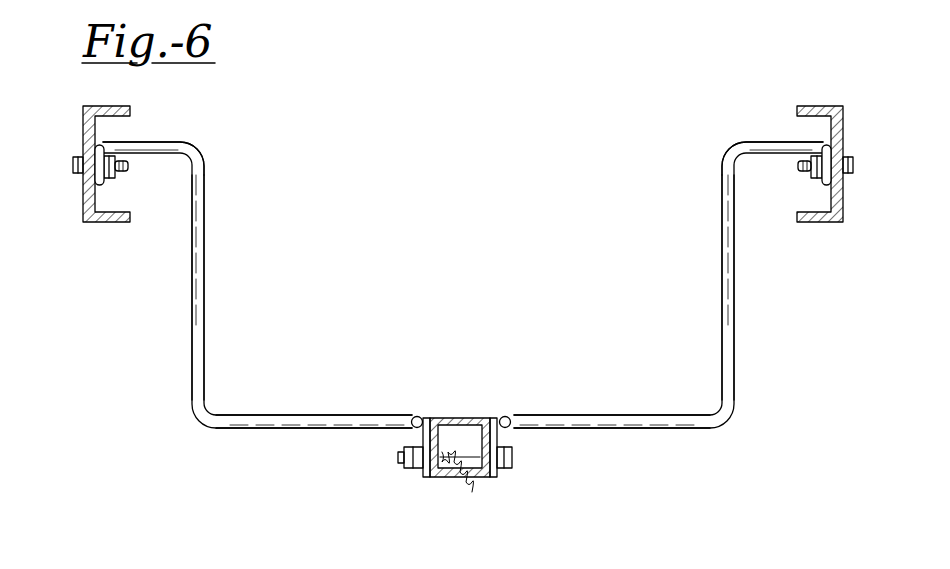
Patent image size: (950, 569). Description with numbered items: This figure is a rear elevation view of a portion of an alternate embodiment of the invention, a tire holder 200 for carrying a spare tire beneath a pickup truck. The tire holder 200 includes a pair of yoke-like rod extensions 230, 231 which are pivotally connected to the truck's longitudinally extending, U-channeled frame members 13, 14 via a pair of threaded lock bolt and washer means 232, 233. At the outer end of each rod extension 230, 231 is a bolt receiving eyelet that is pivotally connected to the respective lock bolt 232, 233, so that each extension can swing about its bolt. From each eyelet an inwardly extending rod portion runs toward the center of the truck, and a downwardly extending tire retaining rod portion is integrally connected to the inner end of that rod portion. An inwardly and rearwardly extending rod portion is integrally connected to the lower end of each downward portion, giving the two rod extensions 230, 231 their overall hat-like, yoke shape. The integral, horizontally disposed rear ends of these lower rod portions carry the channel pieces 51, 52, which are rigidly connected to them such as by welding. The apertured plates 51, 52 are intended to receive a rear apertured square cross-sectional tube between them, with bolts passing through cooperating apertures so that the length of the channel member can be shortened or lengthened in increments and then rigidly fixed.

The tire holder 200 is at (190, 423).
The frame member 13 is at (86, 224).
The frame member 14 is at (818, 224).
The front apertured plate 51 is at (423, 474).
The front apertured plate 52 is at (497, 474).
The yoke-like rod extension 230 is at (205, 252).
The yoke-like rod extension 231 is at (720, 248).
The threaded lock bolt and washer means 232 is at (78, 174).
The threaded lock bolt and washer means 233 is at (856, 160).